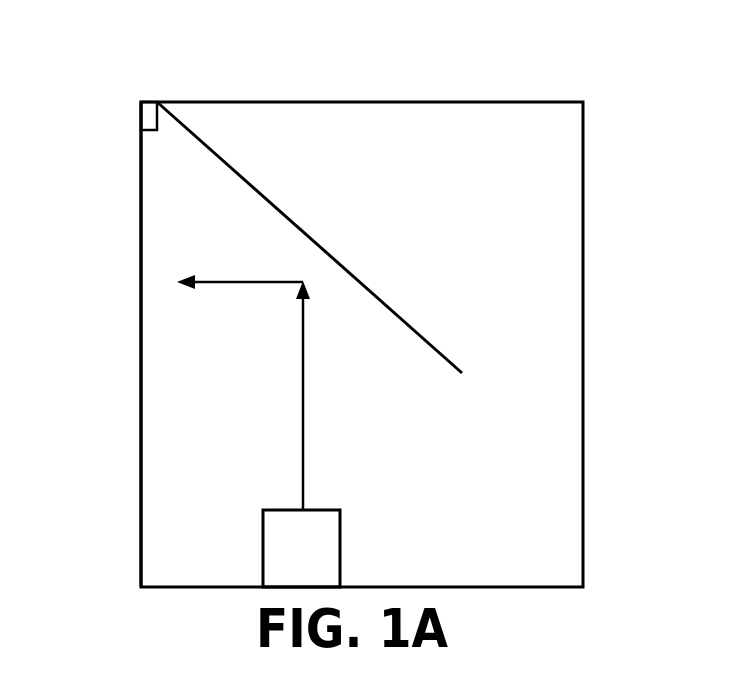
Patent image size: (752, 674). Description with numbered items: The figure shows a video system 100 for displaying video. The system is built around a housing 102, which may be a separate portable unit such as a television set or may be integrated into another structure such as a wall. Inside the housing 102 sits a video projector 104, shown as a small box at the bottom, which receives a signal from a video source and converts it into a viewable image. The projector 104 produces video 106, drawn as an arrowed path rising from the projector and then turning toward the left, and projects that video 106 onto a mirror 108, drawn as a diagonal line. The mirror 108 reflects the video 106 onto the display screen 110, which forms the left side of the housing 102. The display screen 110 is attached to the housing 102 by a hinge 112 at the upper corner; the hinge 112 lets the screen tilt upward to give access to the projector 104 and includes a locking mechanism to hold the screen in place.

The video system 100 is at (341, 24).
The housing 102 is at (533, 91).
The video projector 104 is at (282, 557).
The video 106 is at (304, 420).
The mirror 108 is at (341, 256).
The display screen 110 is at (122, 290).
The hinge 112 is at (136, 110).